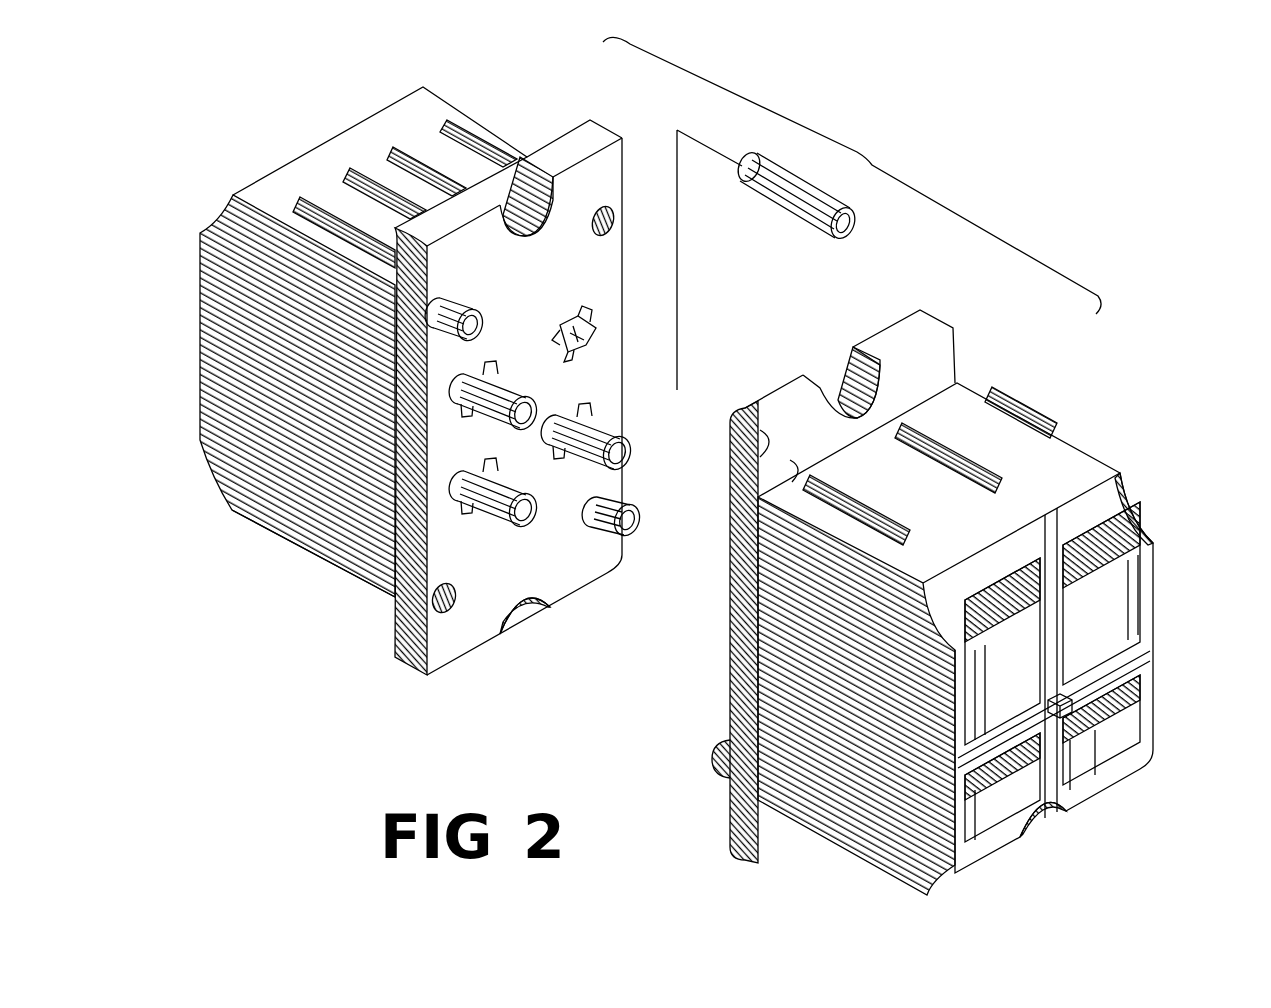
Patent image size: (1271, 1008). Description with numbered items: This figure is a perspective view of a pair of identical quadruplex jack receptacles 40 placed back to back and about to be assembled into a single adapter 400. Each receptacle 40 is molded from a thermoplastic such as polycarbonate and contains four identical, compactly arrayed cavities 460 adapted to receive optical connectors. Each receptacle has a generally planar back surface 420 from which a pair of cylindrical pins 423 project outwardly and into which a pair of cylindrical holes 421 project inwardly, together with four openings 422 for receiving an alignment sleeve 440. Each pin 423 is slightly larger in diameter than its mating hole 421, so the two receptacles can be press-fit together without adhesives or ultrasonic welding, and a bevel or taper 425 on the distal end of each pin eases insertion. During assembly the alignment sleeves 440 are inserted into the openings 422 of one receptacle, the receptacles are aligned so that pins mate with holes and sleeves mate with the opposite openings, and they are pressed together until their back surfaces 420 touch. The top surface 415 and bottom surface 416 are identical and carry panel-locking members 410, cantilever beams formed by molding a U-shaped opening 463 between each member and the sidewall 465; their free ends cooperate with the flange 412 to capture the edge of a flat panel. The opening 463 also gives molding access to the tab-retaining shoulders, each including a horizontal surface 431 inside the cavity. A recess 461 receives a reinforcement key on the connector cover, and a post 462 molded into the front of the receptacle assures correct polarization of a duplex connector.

The quadruplex jack receptacle 40 is at (541, 110).
The adapter 400 is at (852, 175).
The panel-locking member 410 is at (482, 175).
The flange 412 is at (725, 437).
The top surface 415 is at (293, 182).
The bottom surface 416 is at (268, 528).
The planar back surface 420 is at (585, 570).
The cylindrical hole 421 is at (594, 223).
The opening 422 is at (673, 390).
The cylindrical pin 423 is at (457, 303).
The bevel or taper 425 is at (478, 307).
The horizontal surface 431 is at (1000, 820).
The alignment sleeve 440 is at (768, 198).
The cavity 460 is at (1130, 713).
The recess 461 is at (1140, 632).
The post 462 is at (1088, 765).
The opening 463 is at (1000, 432).
The sidewall 465 is at (1103, 588).